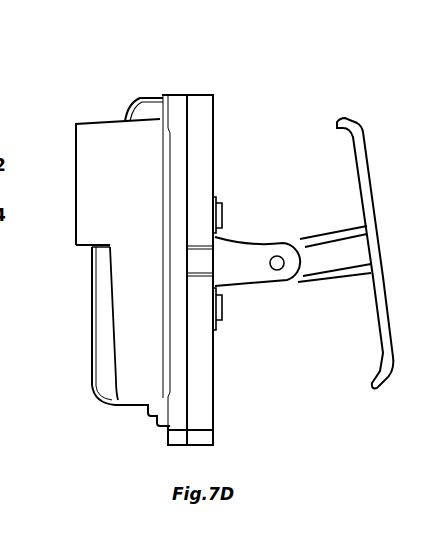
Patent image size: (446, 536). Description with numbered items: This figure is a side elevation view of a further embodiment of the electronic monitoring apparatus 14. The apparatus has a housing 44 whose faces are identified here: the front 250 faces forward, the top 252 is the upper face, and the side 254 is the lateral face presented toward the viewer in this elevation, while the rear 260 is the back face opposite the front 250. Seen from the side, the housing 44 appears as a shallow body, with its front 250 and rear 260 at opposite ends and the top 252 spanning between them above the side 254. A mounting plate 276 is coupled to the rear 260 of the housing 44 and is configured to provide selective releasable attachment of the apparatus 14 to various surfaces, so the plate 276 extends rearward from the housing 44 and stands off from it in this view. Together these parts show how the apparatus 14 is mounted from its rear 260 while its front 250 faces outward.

The electronic monitoring apparatus 14 is at (276, 105).
The housing 44 is at (135, 387).
The front 250 is at (76, 190).
The top 252 is at (98, 122).
The side 254 is at (141, 260).
The rear 260 is at (213, 172).
The mounting plate 276 is at (363, 163).